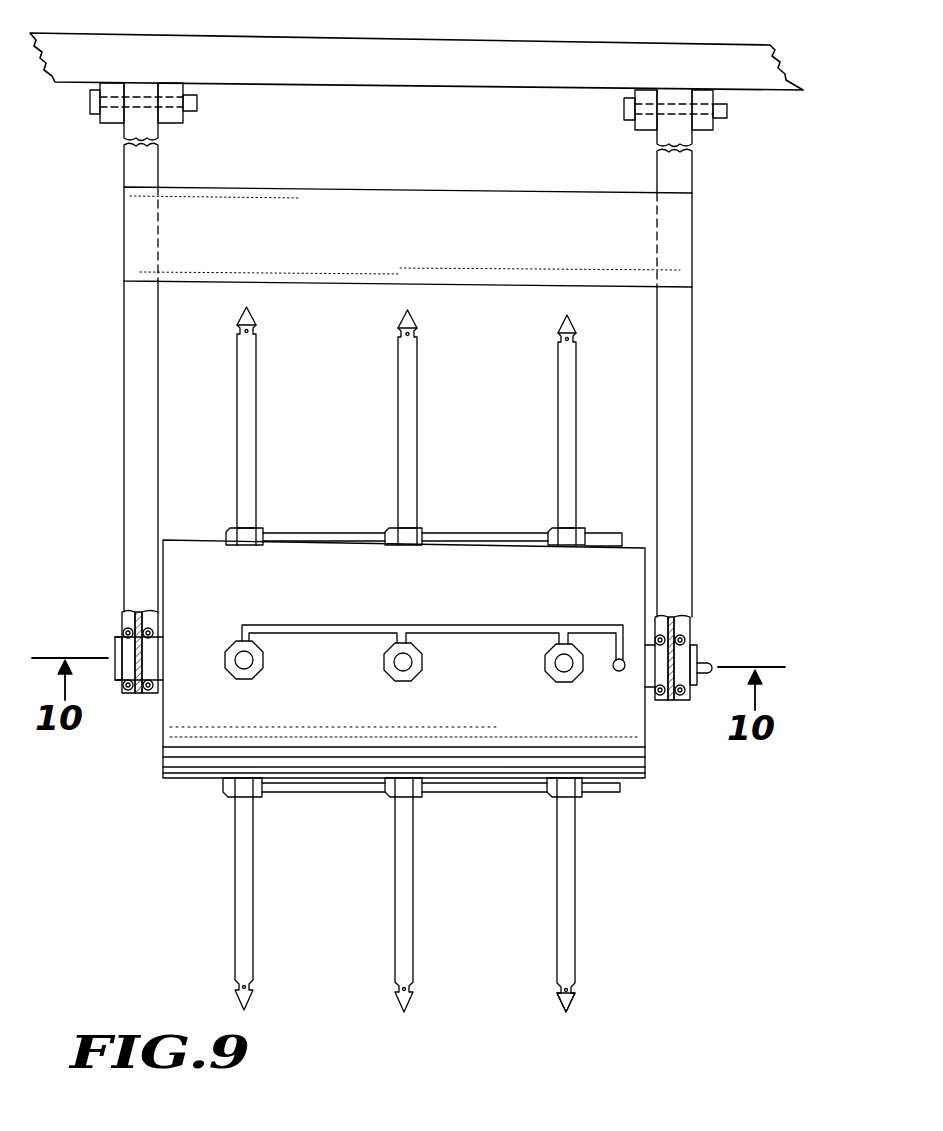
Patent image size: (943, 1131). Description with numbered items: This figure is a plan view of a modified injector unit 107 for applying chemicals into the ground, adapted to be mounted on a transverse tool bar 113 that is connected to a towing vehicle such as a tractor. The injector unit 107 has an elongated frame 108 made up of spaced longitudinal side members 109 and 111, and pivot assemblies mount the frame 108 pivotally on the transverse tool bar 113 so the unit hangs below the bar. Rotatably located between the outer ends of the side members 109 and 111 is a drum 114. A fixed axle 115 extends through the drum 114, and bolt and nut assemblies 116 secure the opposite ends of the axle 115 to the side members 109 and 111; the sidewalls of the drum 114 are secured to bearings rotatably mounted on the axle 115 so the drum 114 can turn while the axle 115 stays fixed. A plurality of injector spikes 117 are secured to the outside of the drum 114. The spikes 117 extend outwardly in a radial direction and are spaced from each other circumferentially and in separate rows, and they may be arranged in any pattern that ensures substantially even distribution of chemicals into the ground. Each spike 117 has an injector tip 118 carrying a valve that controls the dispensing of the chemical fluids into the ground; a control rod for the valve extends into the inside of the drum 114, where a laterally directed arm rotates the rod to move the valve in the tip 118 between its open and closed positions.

The injector unit 107 is at (96, 423).
The elongated frame 108 is at (148, 240).
The longitudinal side member 109 is at (137, 493).
The longitudinal side member 111 is at (677, 485).
The transverse tool bar 113 is at (563, 45).
The drum 114 is at (190, 731).
The fixed axle 115 is at (116, 648).
The bolt and nut assembly 116 is at (692, 648).
The injector spike 117 is at (568, 878).
The injector tip 118 is at (568, 1003).